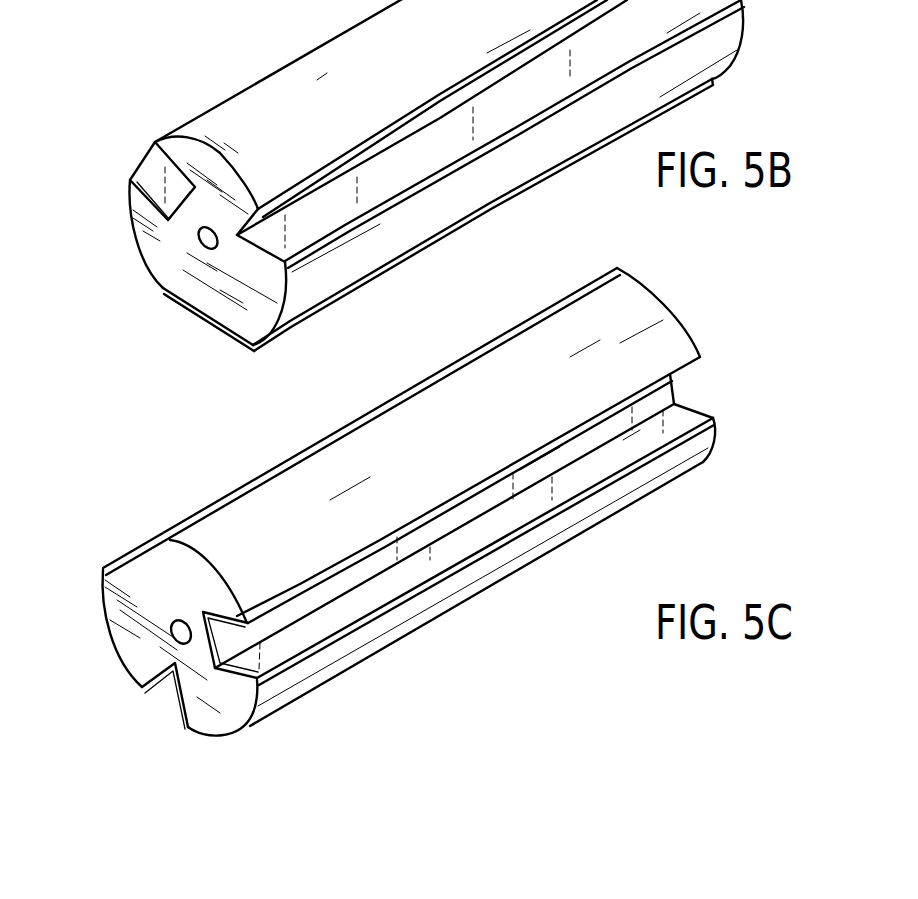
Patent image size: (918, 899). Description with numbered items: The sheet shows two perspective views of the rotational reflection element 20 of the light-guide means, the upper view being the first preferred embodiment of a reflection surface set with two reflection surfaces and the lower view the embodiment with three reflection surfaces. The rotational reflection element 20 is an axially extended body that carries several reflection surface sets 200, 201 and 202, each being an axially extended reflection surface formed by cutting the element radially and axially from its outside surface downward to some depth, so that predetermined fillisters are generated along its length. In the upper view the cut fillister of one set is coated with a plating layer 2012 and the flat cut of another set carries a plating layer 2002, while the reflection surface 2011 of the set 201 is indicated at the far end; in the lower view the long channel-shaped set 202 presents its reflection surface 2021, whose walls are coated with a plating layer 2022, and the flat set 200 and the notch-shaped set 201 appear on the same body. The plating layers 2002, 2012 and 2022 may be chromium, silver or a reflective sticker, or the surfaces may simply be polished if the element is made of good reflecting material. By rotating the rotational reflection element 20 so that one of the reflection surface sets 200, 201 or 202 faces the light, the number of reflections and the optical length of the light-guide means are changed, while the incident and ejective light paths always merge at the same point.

In FIG. 5B, the rotational reflection element 20 is at (133, 227).
In FIG. 5C, the rotational reflection element 20 is at (108, 606).
In FIG. 5B, the reflection surface set 200 is at (180, 326).
In FIG. 5C, the reflection surface set 200 is at (120, 528).
In FIG. 5C, the reflection surface set 201 is at (150, 706).
In FIG. 5B, the reflection surface set 202 is at (128, 141).
In FIG. 5C, the reflection surface set 202 is at (717, 384).
In FIG. 5B, the plating layer 2002 is at (245, 8).
In FIG. 5B, the reflection surface 2011 is at (799, 8).
In FIG. 5B, the plating layer 2012 is at (254, 222).
In FIG. 5C, the reflection surface 2021 is at (700, 363).
In FIG. 5C, the plating layer 2022 is at (238, 622).